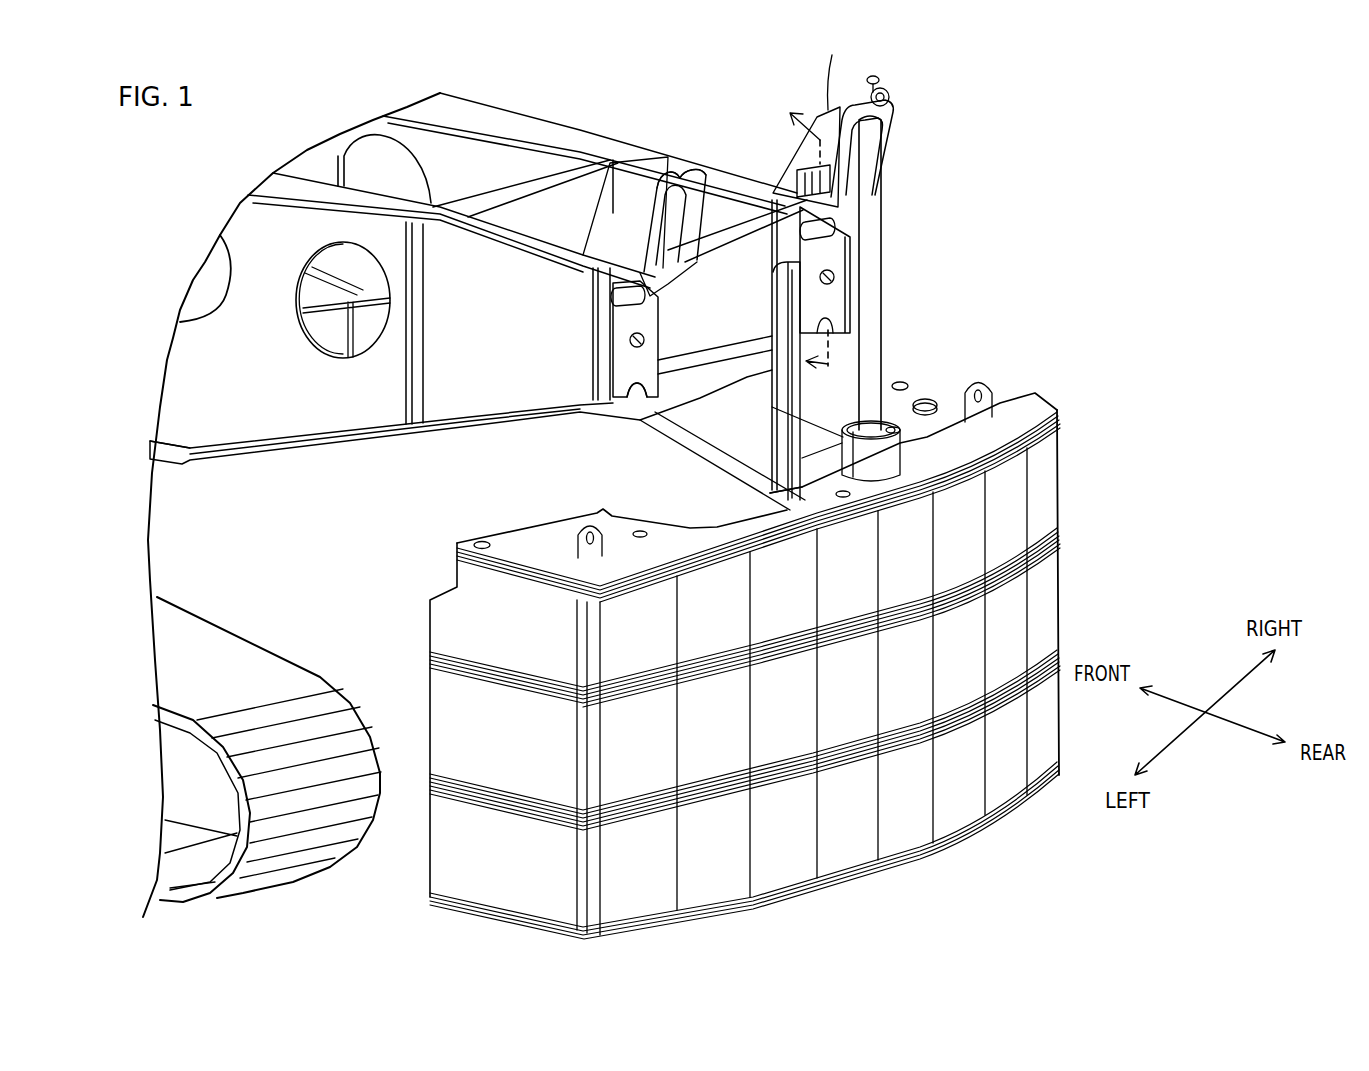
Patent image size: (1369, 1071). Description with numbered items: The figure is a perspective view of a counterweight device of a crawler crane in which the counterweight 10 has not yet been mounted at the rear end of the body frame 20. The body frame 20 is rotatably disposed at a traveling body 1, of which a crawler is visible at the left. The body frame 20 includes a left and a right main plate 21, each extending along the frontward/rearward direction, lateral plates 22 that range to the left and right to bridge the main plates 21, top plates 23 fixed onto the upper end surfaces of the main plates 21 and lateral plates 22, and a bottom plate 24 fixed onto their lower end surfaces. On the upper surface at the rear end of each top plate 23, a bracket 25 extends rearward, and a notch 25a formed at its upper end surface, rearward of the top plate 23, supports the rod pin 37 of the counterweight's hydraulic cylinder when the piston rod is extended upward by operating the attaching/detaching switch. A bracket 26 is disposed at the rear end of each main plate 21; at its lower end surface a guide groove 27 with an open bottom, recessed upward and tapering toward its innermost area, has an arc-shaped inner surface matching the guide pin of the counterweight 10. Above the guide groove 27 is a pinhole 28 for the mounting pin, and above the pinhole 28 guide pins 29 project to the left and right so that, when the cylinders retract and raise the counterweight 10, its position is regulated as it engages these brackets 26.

The traveling body 1 is at (277, 653).
The counterweight 10 is at (1100, 460).
The body frame 20 is at (733, 140).
The main plates 21 is at (533, 160).
The lateral plates 22 is at (555, 210).
The top plates 23 is at (503, 232).
The bottom plate 24 is at (455, 427).
The brackets 25 is at (796, 198).
The notch 25a is at (700, 168).
The bracket 26 is at (660, 362).
The guide groove 27 is at (637, 392).
The pinhole 28 is at (630, 340).
The guide pins 29 is at (612, 297).
The rod pin 37 is at (892, 100).